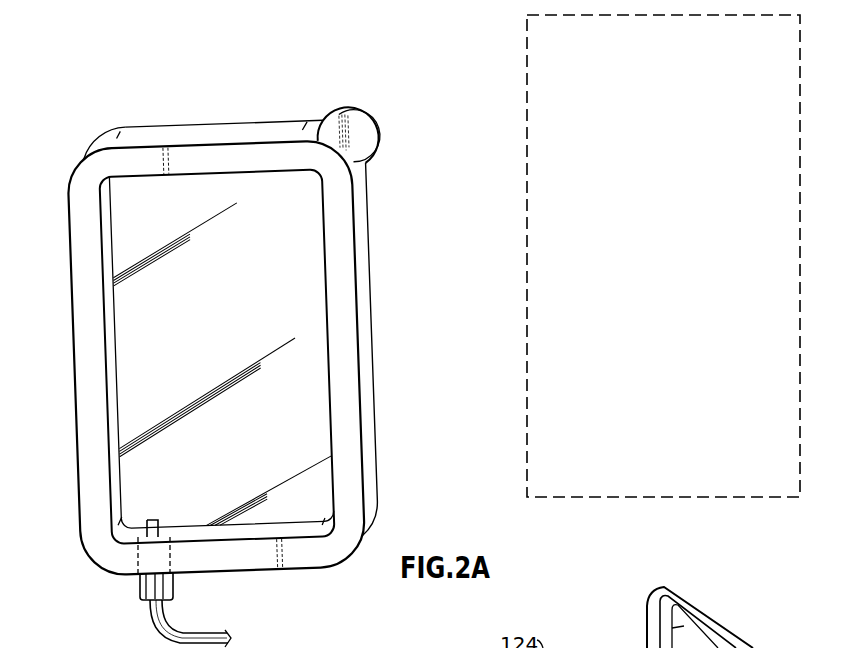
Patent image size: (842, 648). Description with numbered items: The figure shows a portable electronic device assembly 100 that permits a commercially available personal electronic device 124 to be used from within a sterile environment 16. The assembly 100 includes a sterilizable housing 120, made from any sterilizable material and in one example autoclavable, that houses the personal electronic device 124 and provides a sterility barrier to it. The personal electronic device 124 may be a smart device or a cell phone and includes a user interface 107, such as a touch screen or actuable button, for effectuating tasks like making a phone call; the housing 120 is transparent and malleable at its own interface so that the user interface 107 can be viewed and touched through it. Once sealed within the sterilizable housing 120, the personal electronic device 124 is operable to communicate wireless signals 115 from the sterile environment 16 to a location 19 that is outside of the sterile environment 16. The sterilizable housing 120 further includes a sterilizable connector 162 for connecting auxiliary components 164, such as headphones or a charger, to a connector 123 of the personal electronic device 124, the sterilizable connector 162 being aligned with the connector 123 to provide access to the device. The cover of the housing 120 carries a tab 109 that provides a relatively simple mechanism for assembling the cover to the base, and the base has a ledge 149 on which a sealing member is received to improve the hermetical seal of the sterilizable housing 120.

The sterile environment 16 is at (68, 120).
The location outside of the sterile environment 19 is at (680, 96).
The portable electronic device assembly 100 is at (278, 80).
The user interface 107 is at (230, 354).
The tab 109 is at (350, 108).
The wireless signals 115 is at (470, 70).
The sterilizable housing 120 is at (383, 325).
The connector 123 is at (172, 521).
The personal electronic device 124 is at (237, 276).
The ledge 149 is at (647, 633).
The sterilizable connector 162 is at (131, 556).
The auxiliary components 164 is at (190, 633).